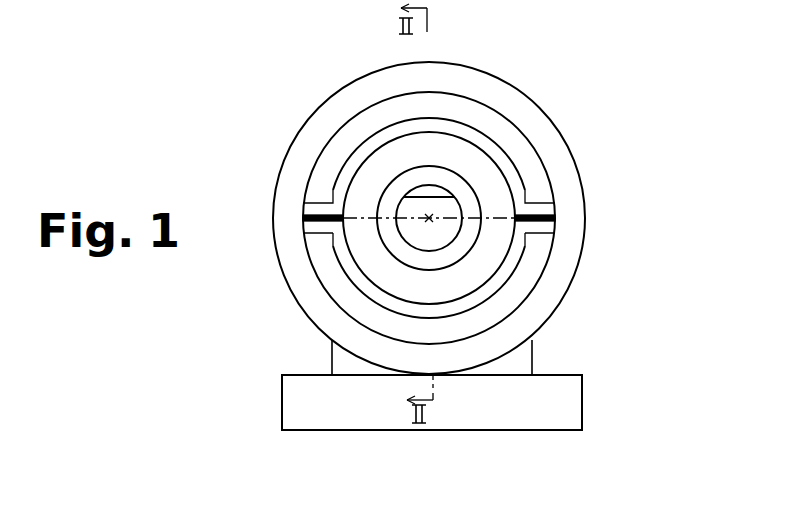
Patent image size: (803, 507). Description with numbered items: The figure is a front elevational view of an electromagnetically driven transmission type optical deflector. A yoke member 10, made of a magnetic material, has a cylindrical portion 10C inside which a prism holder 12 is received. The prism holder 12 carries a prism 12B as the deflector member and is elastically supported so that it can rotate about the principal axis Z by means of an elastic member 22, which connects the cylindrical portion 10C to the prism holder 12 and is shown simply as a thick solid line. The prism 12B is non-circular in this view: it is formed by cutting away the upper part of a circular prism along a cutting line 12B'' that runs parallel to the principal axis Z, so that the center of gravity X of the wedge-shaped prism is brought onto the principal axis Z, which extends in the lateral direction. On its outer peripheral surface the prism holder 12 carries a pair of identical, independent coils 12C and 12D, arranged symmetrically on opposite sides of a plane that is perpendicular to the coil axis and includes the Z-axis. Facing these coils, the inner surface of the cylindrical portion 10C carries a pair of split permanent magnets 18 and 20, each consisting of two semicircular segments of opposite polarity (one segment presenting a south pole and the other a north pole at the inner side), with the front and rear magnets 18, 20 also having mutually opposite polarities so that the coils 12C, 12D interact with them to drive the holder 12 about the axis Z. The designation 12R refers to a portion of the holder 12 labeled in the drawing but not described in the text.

The yoke member 10 is at (601, 161).
The cylindrical portion 10C is at (575, 258).
The prism holder 12 is at (455, 162).
The prism 12B is at (455, 162).
The cutting line 12B'' is at (454, 99).
The coil 12C is at (475, 173).
The coil 12D is at (475, 173).
The rotor body 12R is at (518, 170).
The front permanent magnet 18 is at (450, 189).
The rear permanent magnet 20 is at (367, 120).
The elastic member 22 is at (313, 208).
The center of gravity X is at (430, 218).
The principal axis Z is at (482, 213).